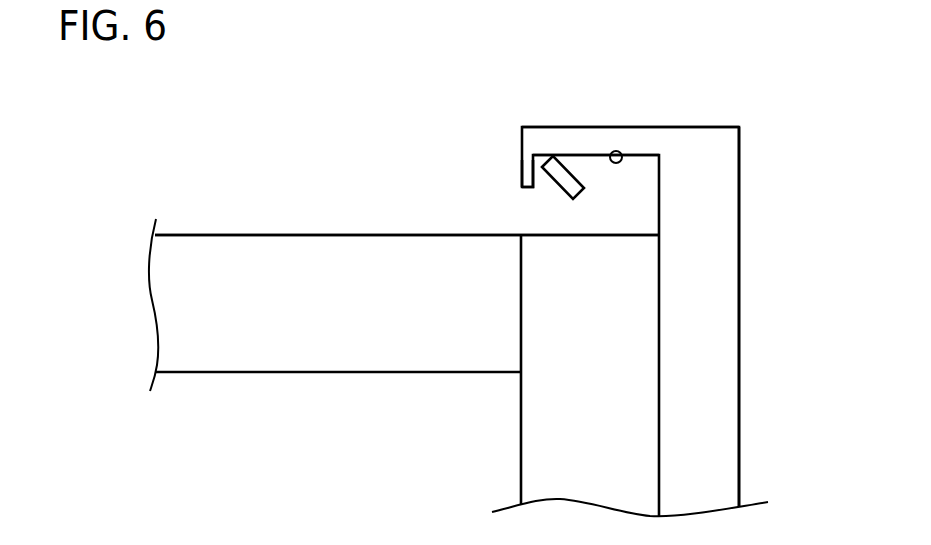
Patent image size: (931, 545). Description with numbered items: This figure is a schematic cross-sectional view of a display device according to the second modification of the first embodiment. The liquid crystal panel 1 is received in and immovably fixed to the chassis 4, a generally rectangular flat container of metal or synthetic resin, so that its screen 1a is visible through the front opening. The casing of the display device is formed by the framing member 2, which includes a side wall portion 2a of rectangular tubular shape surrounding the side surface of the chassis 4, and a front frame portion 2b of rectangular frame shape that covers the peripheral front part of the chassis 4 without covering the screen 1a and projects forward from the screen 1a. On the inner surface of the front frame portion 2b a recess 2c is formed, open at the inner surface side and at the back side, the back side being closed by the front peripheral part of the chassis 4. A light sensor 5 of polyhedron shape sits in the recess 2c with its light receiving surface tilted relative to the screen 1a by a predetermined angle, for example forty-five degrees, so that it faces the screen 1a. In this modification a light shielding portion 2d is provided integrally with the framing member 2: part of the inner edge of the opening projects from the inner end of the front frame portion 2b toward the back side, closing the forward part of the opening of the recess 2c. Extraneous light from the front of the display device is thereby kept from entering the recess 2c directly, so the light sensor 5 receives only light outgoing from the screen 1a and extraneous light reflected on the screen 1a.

The liquid crystal panel 1 is at (265, 258).
The screen 1a is at (352, 234).
The framing member 2 is at (742, 280).
The side wall portion 2a is at (720, 427).
The front frame portion 2b is at (543, 133).
The recess 2c is at (622, 152).
The light shielding portion 2d is at (521, 174).
The chassis 4 is at (533, 433).
The light sensor 5 is at (579, 164).